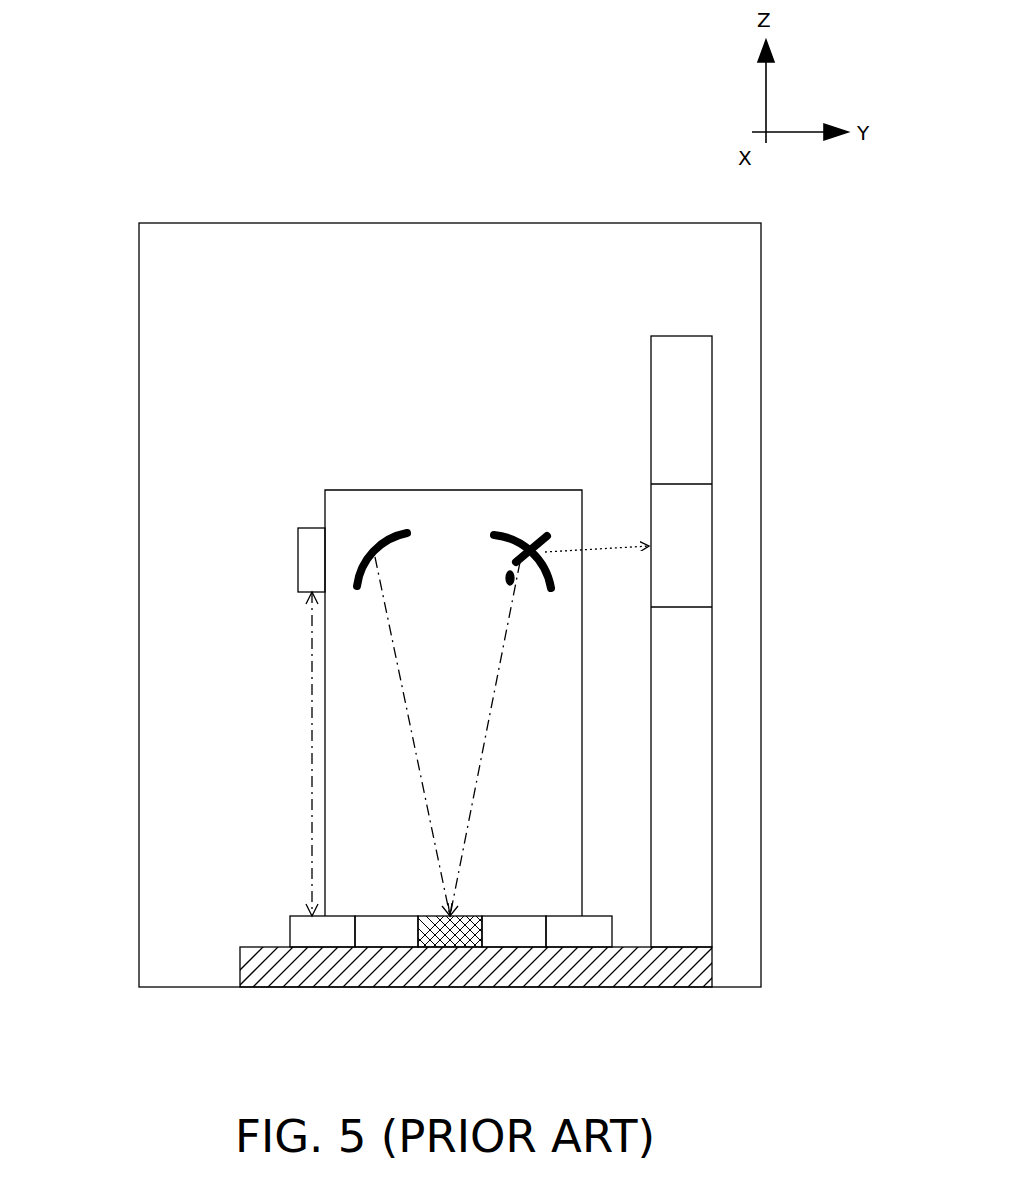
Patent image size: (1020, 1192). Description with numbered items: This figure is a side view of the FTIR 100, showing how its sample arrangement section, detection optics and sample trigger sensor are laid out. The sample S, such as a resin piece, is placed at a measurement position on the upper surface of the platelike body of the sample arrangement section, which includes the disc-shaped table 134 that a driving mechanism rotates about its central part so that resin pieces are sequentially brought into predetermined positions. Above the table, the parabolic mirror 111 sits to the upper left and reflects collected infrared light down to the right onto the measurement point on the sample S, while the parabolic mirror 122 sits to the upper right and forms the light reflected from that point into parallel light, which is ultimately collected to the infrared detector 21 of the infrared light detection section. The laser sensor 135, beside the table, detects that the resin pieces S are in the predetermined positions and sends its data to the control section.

The FTIR 100 is at (440, 157).
The parabolic mirror 111 is at (395, 532).
The parabolic mirror 122 is at (500, 532).
The laser sensor 135 is at (298, 560).
The infrared detector 21 is at (712, 545).
The disc-shaped table 134 is at (274, 988).
The sample S is at (452, 947).